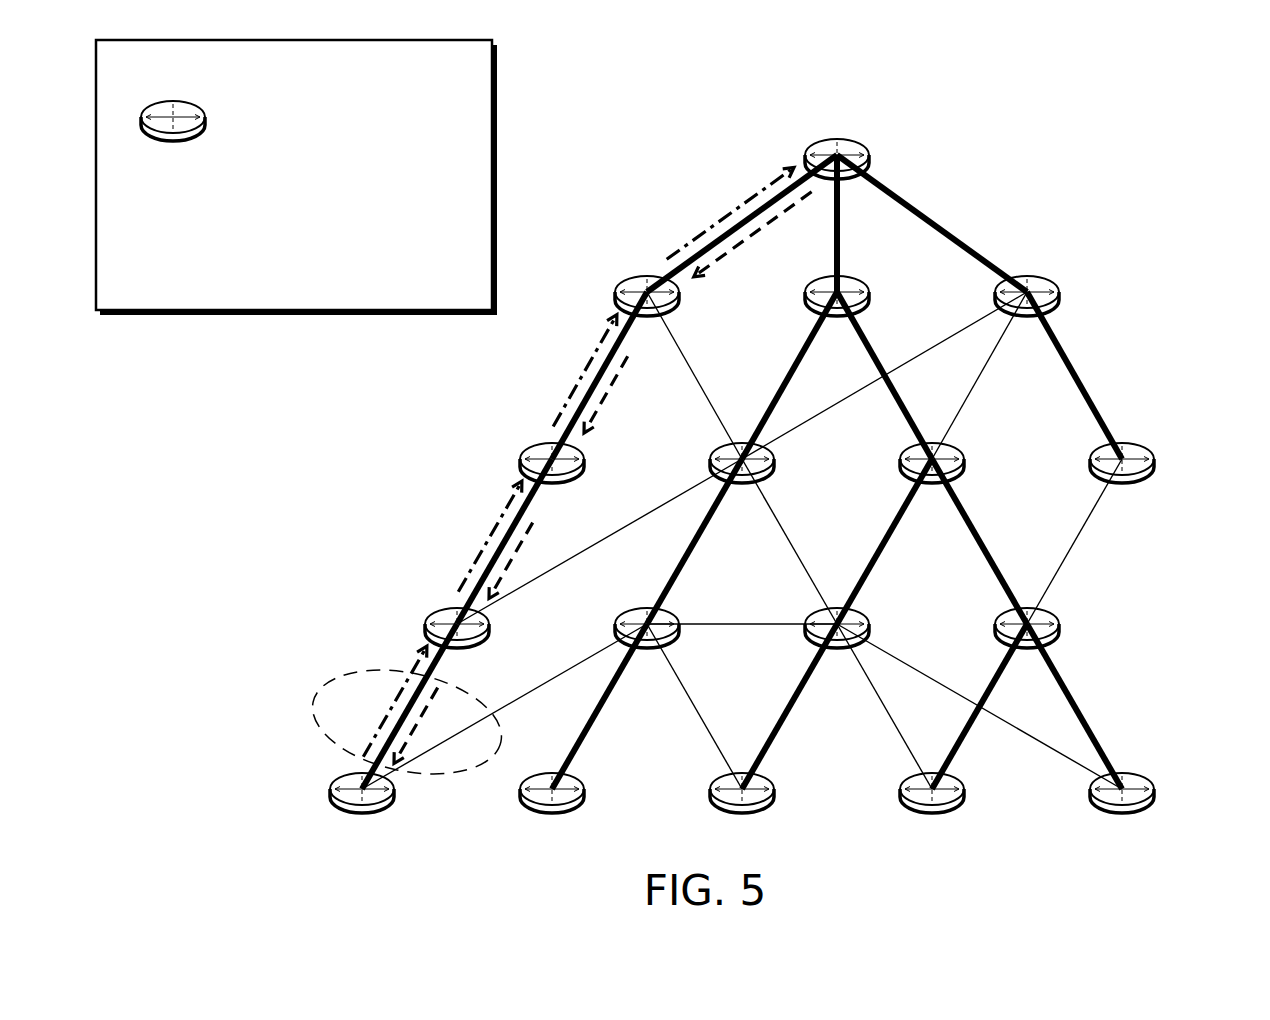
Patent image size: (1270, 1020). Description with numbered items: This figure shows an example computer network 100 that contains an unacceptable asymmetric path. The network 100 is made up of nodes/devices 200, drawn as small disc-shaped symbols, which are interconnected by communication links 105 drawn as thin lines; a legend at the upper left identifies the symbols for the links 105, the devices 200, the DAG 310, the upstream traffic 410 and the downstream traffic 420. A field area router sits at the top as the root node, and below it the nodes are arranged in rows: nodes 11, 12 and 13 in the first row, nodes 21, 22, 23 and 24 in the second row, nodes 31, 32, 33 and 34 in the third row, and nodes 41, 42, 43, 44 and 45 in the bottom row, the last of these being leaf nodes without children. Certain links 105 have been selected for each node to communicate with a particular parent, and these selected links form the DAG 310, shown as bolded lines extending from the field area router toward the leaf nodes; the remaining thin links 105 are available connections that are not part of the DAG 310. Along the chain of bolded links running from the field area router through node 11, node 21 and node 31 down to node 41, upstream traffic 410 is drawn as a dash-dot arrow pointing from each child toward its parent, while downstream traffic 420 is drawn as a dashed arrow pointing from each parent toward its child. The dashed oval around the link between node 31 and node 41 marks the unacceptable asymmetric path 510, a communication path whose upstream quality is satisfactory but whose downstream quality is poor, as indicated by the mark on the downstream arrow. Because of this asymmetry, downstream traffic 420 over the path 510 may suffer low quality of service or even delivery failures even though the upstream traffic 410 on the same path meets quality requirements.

The computer network 100 is at (1213, 102).
The communication links 105 is at (132, 72).
The nodes/devices 200 is at (260, 121).
The DAG 310 is at (132, 186).
The upstream traffic 410 is at (140, 235).
The downstream traffic 420 is at (140, 282).
The unacceptable asymmetric path 510 is at (327, 677).
The node 11 is at (647, 315).
The node 12 is at (837, 315).
The node 13 is at (1027, 315).
The node 21 is at (552, 482).
The node 22 is at (742, 482).
The node 23 is at (932, 482).
The node 24 is at (1122, 482).
The node 31 is at (457, 647).
The node 32 is at (647, 647).
The node 33 is at (837, 647).
The node 34 is at (1027, 647).
The node 41 is at (362, 812).
The node 42 is at (552, 812).
The node 43 is at (742, 812).
The node 44 is at (932, 812).
The node 45 is at (1122, 812).